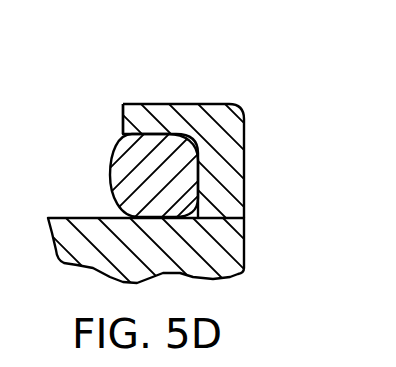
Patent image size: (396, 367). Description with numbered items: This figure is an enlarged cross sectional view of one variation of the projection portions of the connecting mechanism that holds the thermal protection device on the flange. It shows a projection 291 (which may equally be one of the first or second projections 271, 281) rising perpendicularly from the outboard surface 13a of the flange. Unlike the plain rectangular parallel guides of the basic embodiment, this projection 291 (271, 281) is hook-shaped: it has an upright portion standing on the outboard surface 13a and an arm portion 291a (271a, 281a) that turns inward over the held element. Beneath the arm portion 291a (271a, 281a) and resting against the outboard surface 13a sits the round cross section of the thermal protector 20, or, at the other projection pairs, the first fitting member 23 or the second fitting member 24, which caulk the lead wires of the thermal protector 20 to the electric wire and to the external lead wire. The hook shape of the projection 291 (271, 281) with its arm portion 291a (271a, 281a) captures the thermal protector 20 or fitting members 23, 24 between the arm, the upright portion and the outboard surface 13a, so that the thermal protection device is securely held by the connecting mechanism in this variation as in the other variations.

The projection 291 is at (161, 104).
The projection 271 is at (229, 141).
The projection 281 is at (229, 141).
The arm portion 291a is at (133, 117).
The arm portion 271a is at (141, 73).
The arm portion 281a is at (141, 73).
The thermal protector 20 is at (189, 160).
The first fitting member 23 is at (199, 175).
The second fitting member 24 is at (199, 175).
The outboard surface 13a is at (74, 219).